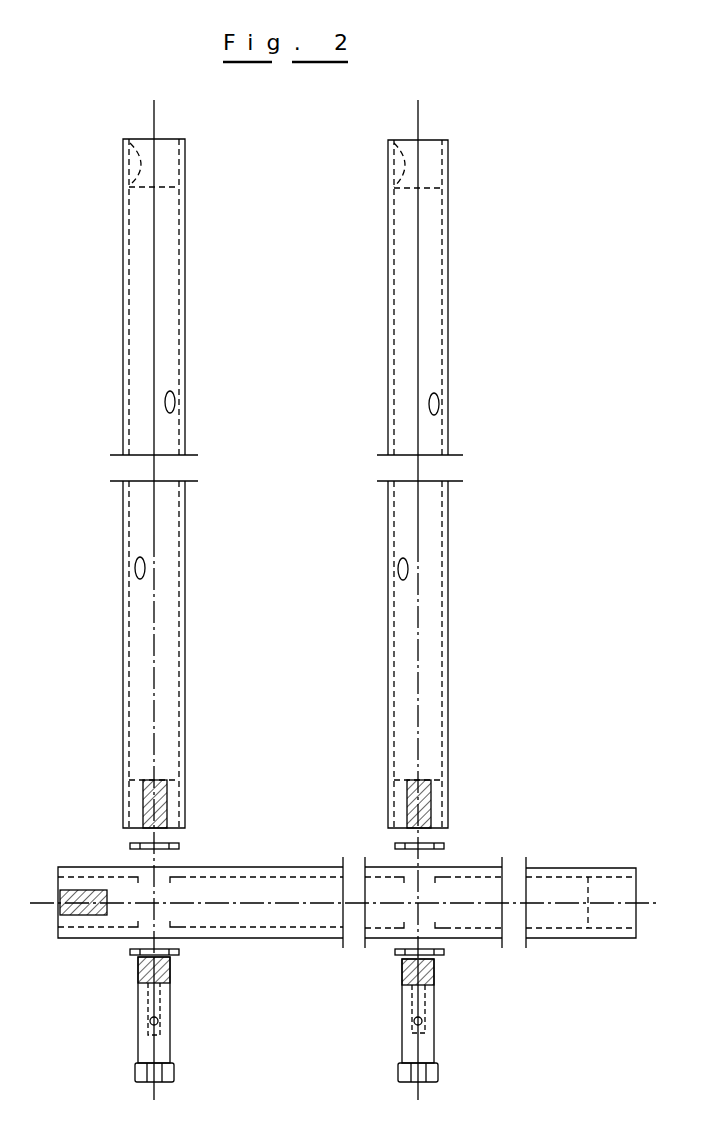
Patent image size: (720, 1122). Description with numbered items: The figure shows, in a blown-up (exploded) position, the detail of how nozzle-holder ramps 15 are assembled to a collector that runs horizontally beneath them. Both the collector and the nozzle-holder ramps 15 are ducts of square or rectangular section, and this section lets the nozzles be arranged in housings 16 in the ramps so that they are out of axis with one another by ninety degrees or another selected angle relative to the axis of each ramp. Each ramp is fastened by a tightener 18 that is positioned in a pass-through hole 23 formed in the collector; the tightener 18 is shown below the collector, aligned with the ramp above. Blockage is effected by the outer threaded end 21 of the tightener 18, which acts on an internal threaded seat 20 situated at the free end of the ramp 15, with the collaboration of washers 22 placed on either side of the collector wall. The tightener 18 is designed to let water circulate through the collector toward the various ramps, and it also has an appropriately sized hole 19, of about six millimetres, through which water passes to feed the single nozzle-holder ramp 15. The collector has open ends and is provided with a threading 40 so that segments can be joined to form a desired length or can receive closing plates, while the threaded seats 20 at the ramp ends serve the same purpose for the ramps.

The nozzle-holder ramp 15 is at (402, 312).
The housing 16 is at (172, 402).
The tightener 18 is at (163, 1047).
The hole 19 is at (148, 1025).
The internal threaded seat 20 is at (137, 143).
The outer threaded end 21 is at (170, 977).
The washer 22 is at (180, 845).
The pass-through hole 23 is at (163, 867).
The threading 40 is at (65, 938).